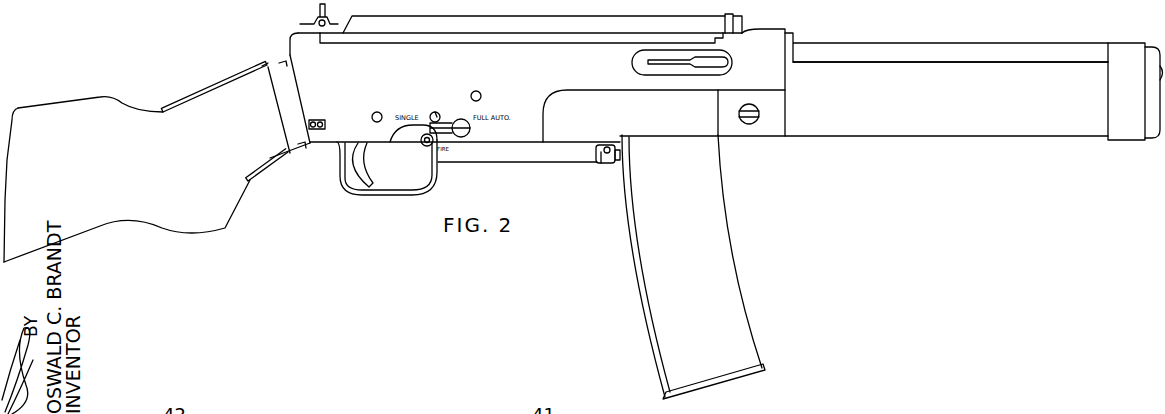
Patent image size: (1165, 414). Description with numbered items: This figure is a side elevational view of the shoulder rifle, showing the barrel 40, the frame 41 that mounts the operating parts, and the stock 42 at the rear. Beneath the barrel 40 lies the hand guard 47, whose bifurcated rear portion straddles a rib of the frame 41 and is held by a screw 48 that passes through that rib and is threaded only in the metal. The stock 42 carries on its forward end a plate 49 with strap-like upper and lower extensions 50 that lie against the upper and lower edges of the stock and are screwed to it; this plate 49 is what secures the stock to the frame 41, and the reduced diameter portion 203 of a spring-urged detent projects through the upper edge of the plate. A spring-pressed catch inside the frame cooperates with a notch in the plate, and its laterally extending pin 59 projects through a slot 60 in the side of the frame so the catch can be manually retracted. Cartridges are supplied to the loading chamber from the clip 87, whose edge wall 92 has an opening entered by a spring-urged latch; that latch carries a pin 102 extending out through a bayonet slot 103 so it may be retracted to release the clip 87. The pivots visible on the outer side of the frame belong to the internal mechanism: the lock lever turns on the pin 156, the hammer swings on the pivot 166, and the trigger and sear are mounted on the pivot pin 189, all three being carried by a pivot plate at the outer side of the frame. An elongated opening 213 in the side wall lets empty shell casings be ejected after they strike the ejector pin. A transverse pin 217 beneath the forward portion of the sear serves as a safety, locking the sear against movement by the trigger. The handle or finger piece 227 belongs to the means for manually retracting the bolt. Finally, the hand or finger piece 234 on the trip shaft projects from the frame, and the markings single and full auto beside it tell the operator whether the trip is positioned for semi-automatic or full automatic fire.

The barrel 40 is at (890, 47).
The frame 41 is at (558, 170).
The stock 42 is at (68, 96).
The hand guard 47 is at (928, 118).
The screw 48 is at (750, 125).
The plate 49 is at (277, 115).
The upper and lower extensions 50 is at (183, 100).
The pin 59 is at (316, 120).
The slot 60 is at (323, 123).
The clip 87 is at (737, 244).
The edge wall 92 is at (637, 263).
The pin 102 is at (612, 167).
The bayonet slot 103 is at (598, 167).
The pin 156 is at (481, 95).
The pivot 166 is at (435, 112).
The pivot pin 189 is at (377, 112).
The reduced diameter portion 203 is at (258, 64).
The elongated opening 213 is at (647, 55).
The pin 217 is at (425, 143).
The handle or finger piece 227 is at (741, 18).
The hand or finger piece 234 is at (448, 134).